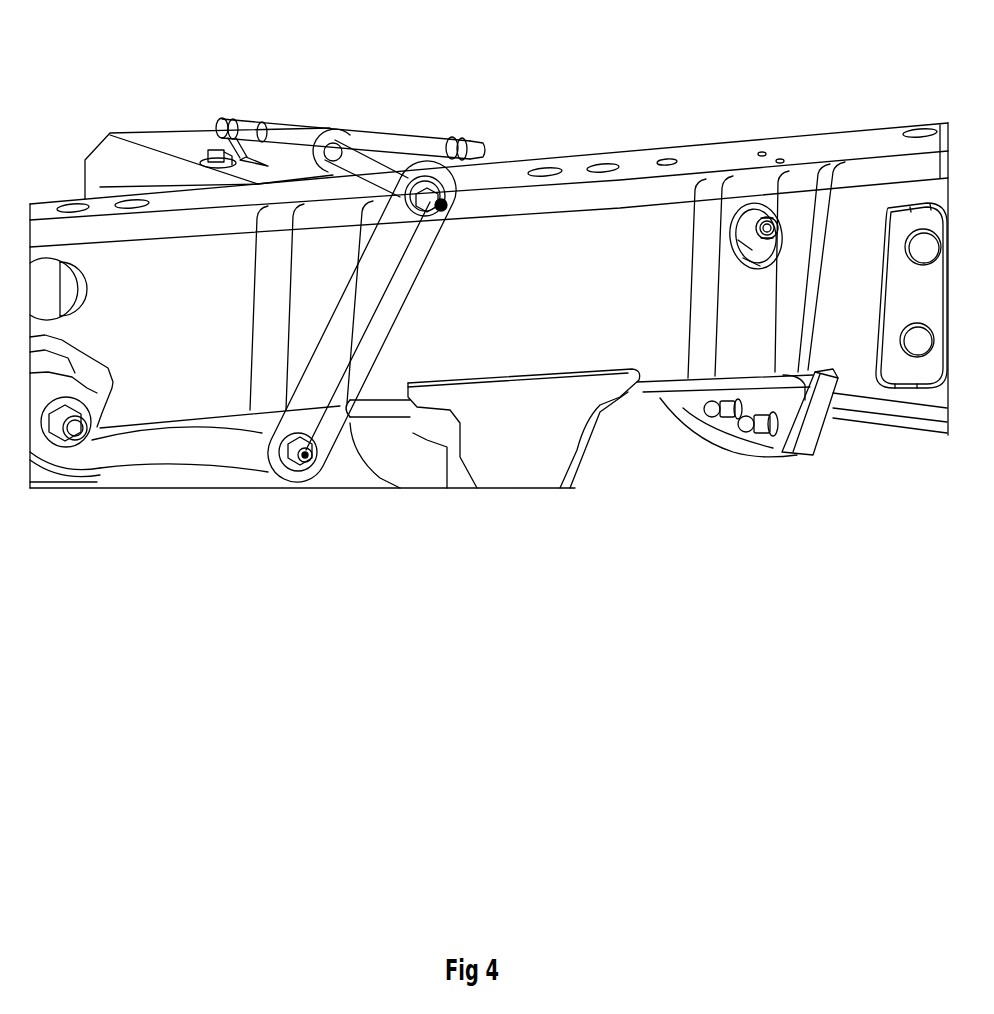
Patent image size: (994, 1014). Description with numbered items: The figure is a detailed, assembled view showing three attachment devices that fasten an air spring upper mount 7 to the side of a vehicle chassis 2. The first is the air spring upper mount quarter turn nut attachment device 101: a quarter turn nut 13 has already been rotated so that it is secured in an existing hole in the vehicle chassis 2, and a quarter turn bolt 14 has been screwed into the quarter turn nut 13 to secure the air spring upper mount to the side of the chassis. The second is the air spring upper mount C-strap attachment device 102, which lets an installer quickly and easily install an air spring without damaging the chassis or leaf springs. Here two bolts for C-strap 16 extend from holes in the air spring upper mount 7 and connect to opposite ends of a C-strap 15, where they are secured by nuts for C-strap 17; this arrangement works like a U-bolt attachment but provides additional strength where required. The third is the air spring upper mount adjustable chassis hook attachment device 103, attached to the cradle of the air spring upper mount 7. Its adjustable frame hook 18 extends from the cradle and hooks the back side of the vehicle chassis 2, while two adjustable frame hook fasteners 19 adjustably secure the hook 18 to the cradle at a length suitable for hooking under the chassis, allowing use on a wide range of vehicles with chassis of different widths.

The vehicle chassis 2 is at (545, 272).
The air spring upper mount 7 is at (122, 147).
The quarter turn nut 13 is at (742, 225).
The quarter turn bolt 14 is at (771, 232).
The C-strap 15 is at (361, 327).
The bolts for C-strap 16 is at (252, 434).
The nuts for C-strap 17 is at (428, 213).
The adjustable frame hook 18 is at (812, 448).
The adjustable frame hook fasteners 19 is at (745, 425).
The air spring upper mount quarter turn nut attachment device 101 is at (728, 130).
The air spring upper mount C-strap attachment device 102 is at (332, 118).
The air spring upper mount adjustable chassis hook attachment device 103 is at (743, 467).